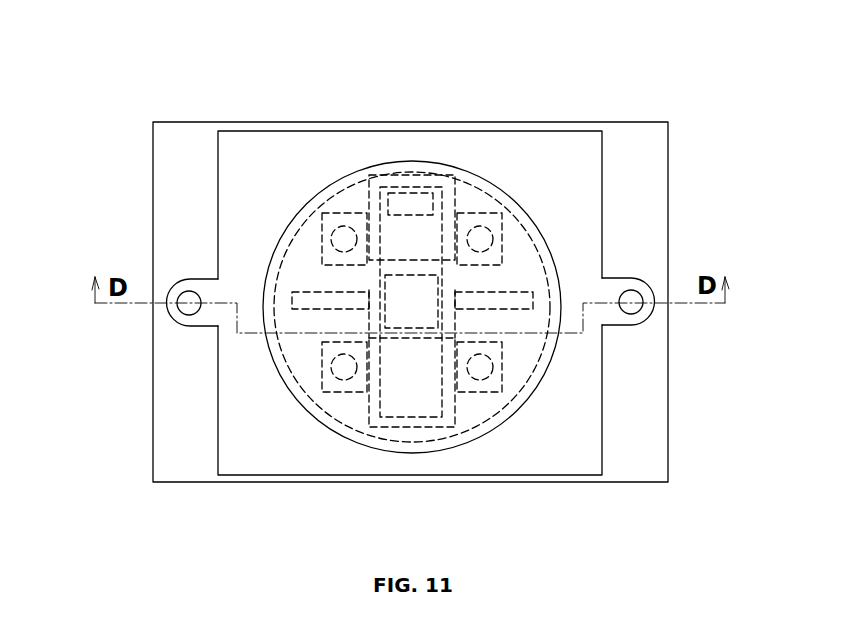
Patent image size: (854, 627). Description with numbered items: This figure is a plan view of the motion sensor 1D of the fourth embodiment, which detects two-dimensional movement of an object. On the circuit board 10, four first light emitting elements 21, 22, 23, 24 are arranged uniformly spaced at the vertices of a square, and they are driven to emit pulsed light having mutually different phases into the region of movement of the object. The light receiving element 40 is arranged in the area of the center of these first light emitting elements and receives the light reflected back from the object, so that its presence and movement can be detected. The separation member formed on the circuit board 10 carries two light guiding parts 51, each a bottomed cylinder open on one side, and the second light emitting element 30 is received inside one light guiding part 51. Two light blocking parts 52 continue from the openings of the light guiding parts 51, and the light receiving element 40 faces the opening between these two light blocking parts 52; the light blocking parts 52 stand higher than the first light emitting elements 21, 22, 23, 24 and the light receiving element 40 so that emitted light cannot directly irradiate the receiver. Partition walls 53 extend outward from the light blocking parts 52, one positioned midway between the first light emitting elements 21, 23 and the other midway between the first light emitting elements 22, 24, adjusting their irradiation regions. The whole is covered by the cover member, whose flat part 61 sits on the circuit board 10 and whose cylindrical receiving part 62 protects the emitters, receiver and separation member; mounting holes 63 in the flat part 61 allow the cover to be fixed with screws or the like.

The motion sensor 1D is at (394, 255).
The circuit board 10 is at (165, 180).
The first light emitting element 21 is at (343, 238).
The first light emitting element 22 is at (478, 237).
The first light emitting element 23 is at (343, 368).
The first light emitting element 24 is at (480, 368).
The second light emitting element 30 is at (417, 205).
The light receiving element 40 is at (405, 290).
The light guiding part 51 is at (403, 174).
The light blocking part 52 is at (373, 288).
The partition wall 53 is at (305, 309).
The flat part 61 is at (585, 215).
The cylindrical receiving part 62 is at (356, 168).
The mounting hole 63 is at (189, 308).